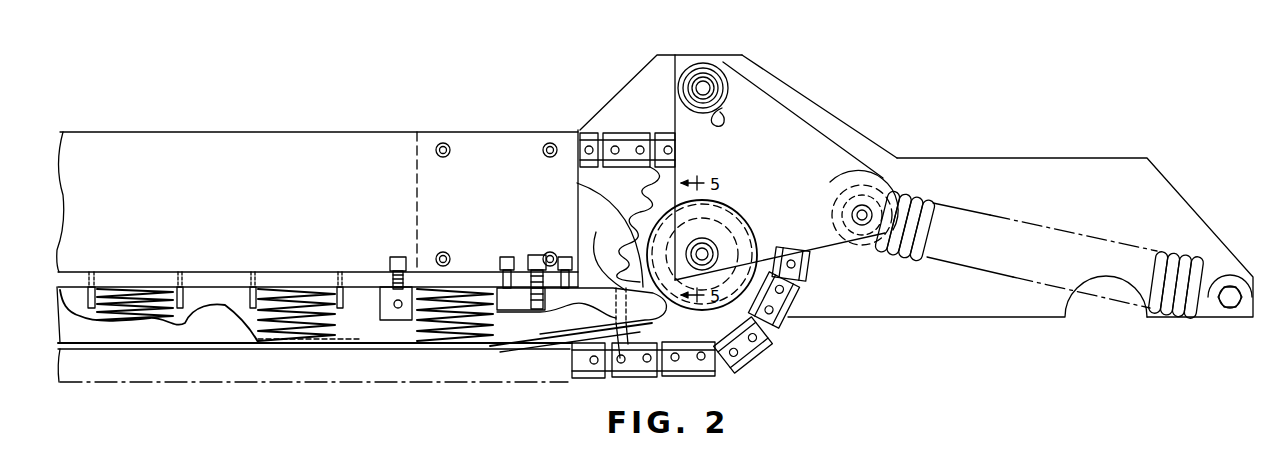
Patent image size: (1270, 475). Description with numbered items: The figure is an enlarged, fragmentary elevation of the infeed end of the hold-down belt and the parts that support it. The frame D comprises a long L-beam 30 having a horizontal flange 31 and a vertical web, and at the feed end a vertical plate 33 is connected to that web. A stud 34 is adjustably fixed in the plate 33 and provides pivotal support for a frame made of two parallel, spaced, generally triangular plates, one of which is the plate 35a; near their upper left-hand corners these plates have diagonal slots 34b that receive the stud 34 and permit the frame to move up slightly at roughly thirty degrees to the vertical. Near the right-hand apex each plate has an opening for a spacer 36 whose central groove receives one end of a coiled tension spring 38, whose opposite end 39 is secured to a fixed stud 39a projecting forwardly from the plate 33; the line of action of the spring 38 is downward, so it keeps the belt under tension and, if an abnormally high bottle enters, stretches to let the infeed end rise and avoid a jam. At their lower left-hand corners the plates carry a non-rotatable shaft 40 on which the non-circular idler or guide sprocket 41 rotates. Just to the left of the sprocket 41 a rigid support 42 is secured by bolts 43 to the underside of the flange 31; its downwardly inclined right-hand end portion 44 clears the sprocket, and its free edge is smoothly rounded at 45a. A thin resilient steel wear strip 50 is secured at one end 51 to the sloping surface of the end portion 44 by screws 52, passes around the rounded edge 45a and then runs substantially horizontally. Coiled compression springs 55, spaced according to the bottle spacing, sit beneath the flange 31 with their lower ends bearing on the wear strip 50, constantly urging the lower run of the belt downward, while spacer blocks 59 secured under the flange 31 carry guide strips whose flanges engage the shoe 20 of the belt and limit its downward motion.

The shoe 20 is at (752, 344).
The L-beam 30 is at (279, 183).
The horizontal flange 31 is at (237, 283).
The vertical plate 33 is at (649, 77).
The stud 34 is at (706, 85).
The diagonal slots 34b is at (722, 108).
The plate 35a is at (790, 130).
The spacer 36 is at (868, 200).
The coiled tension spring 38 is at (922, 197).
The opposite end of spring 39 is at (1221, 272).
The fixed stud 39a is at (1228, 308).
The non-rotatable shaft 40 is at (706, 258).
The idler or guide sprocket 41 is at (577, 183).
The rigid support 42 is at (520, 302).
The bolts 43 is at (540, 268).
The downwardly inclined right-hand end portion 44 is at (621, 362).
The rounded free edge 45a is at (668, 308).
The wear strip 50 is at (392, 335).
The end of wear strip 51 is at (640, 225).
The screws 52 is at (596, 232).
The coiled compression springs 55 is at (320, 288).
The spacer blocks 59 is at (383, 293).
The frame D is at (397, 108).